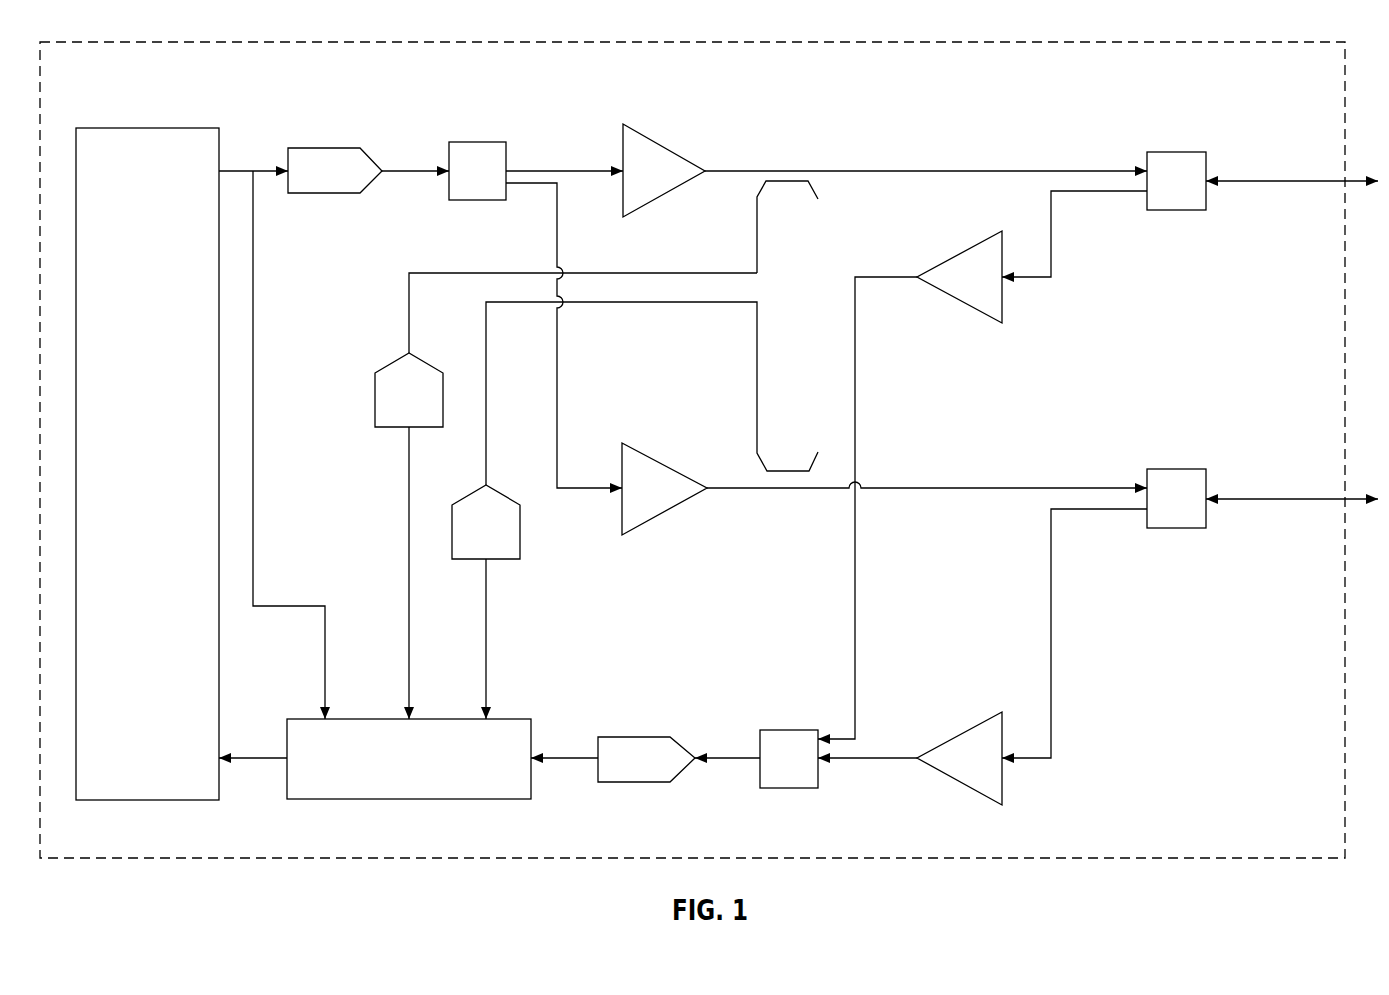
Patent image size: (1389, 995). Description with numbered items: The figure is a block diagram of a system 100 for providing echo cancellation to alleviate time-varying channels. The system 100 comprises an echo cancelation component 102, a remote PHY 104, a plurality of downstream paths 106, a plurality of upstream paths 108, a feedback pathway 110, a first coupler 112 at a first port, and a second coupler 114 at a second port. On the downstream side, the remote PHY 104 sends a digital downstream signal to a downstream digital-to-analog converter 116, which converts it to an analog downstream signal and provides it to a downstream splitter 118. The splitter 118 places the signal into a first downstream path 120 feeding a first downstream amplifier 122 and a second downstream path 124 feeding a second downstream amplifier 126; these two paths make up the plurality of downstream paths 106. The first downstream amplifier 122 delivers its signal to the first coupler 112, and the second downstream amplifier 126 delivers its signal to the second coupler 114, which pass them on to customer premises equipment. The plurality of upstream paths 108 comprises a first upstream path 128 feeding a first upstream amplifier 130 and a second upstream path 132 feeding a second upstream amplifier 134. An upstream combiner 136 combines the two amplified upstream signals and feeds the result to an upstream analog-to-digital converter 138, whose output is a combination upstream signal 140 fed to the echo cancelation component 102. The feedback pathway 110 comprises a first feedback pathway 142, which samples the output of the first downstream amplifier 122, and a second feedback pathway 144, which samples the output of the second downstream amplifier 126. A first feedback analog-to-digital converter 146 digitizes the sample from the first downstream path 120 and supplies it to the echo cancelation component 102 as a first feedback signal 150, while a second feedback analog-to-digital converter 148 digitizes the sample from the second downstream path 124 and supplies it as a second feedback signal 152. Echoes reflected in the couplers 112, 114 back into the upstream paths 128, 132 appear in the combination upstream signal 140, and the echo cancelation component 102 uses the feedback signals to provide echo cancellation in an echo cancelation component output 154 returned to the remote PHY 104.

The system 100 is at (125, 40).
The echo cancelation component 102 is at (310, 718).
The remote PHY 104 is at (126, 128).
The plurality of downstream paths 106 is at (440, 88).
The plurality of upstream paths 108 is at (997, 417).
The feedback pathway 110 is at (700, 262).
The first coupler 112 is at (1160, 152).
The second coupler 114 is at (1160, 469).
The downstream digital-to-analog converter 116 is at (315, 148).
The downstream splitter 118 is at (468, 142).
The first downstream path 120 is at (590, 136).
The first downstream amplifier 122 is at (665, 142).
The second downstream path 124 is at (565, 392).
The second downstream amplifier 126 is at (665, 465).
The first upstream path 128 is at (1067, 267).
The first upstream amplifier 130 is at (955, 255).
The second upstream path 132 is at (1067, 640).
The second upstream amplifier 134 is at (955, 733).
The upstream combiner 136 is at (780, 790).
The upstream analog-to-digital converter 138 is at (648, 737).
The combination upstream signal 140 is at (568, 745).
The first feedback pathway 142 is at (757, 237).
The second feedback pathway 144 is at (757, 328).
The first feedback analog-to-digital converter 146 is at (395, 362).
The second feedback analog-to-digital converter 148 is at (505, 560).
The first feedback signal 150 is at (405, 543).
The second feedback signal 152 is at (487, 655).
The echo cancelation component output 154 is at (270, 765).